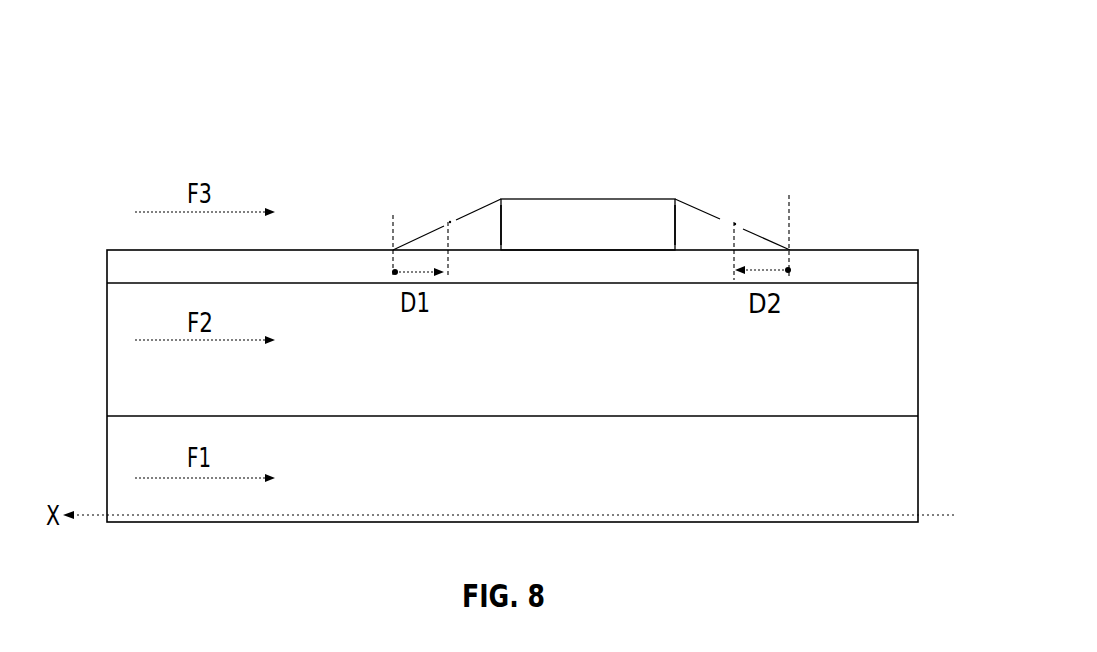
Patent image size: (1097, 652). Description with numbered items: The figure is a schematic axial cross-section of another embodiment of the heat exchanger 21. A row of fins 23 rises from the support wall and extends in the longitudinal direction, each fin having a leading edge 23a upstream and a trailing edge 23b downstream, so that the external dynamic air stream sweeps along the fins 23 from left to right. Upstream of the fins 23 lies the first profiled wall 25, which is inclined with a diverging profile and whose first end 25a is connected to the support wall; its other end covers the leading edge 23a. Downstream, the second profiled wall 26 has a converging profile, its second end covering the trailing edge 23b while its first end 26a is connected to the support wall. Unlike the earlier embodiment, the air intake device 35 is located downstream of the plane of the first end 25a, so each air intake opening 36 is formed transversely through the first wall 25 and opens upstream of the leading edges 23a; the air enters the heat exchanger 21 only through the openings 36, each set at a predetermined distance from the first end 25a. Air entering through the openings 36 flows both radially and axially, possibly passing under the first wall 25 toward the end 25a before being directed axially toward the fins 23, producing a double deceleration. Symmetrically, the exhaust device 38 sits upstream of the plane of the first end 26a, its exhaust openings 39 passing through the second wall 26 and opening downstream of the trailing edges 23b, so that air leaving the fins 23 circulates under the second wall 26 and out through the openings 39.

The heat exchanger 21 is at (768, 168).
The fins 23 is at (605, 251).
The leading edge 23a is at (501, 228).
The trailing edge 23b is at (675, 228).
The first profiled wall 25 is at (473, 216).
The first end of the first wall 25a is at (393, 250).
The second profiled wall 26 is at (716, 220).
The first end of the second wall 26a is at (790, 250).
The air intake device 35 is at (449, 222).
The air intake openings 36 is at (451, 220).
The air exhaust device 38 is at (733, 221).
The exhaust openings 39 is at (738, 222).